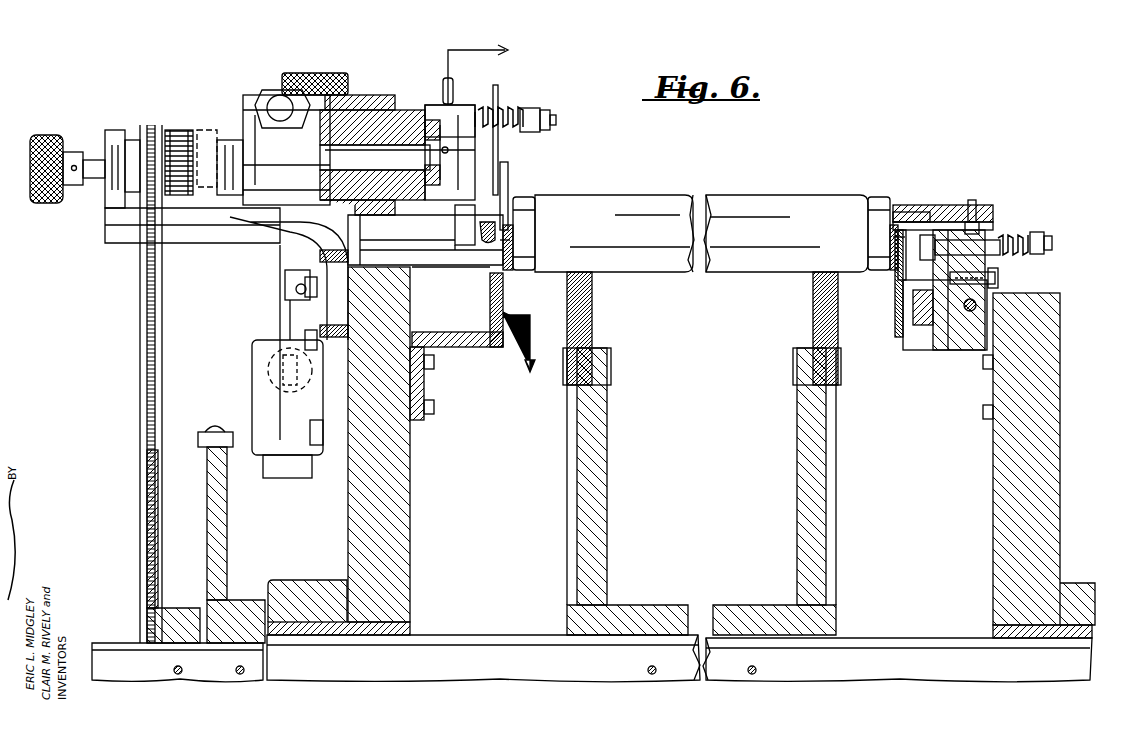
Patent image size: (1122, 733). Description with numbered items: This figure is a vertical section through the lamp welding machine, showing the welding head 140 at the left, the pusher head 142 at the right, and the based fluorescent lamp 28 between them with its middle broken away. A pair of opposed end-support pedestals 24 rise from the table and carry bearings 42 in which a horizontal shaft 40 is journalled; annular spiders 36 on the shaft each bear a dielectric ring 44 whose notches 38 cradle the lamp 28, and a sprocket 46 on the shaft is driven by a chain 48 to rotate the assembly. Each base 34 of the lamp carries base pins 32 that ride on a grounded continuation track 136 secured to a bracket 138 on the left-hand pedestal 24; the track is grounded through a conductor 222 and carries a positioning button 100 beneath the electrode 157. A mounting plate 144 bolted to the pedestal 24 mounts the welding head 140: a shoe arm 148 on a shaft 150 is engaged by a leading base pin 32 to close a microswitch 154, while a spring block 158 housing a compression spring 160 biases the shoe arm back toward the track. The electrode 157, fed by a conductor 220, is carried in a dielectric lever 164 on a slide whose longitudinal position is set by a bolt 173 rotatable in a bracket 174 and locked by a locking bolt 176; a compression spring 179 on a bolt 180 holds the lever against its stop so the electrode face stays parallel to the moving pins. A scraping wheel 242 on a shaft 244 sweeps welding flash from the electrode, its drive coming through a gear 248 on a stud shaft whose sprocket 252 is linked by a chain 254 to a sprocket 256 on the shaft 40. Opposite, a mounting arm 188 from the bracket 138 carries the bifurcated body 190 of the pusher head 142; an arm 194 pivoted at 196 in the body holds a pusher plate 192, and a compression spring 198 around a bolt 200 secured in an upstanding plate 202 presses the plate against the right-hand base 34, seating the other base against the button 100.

The end-support pedestal 24 is at (400, 531).
The based fluorescent lamp 28 is at (713, 203).
The base pin 32 is at (512, 230).
The base 34 is at (525, 198).
The annular spider 36 is at (610, 378).
The serrations or notches 38 is at (592, 276).
The horizontal shaft 40 is at (478, 645).
The bearing 42 is at (312, 590).
The ring 44 is at (592, 322).
The sprocket 46 is at (228, 545).
The chain 48 is at (200, 432).
The positioning button 100 is at (525, 240).
The continuation track 136 is at (505, 303).
The bracket 138 is at (463, 348).
The welding head 140 is at (245, 98).
The pusher head 142 is at (938, 200).
The mounting plate 144 is at (195, 226).
The shoe arm 148 is at (508, 176).
The shaft 150 is at (272, 247).
The microswitch 154 is at (258, 396).
The electrode 157 is at (468, 245).
The spring block 158 is at (290, 296).
The compression spring 160 is at (290, 282).
The lever 164 is at (455, 110).
The bolt 173 is at (72, 158).
The bracket 174 is at (207, 128).
The locking bolt 176 is at (298, 78).
The compression spring 179 is at (503, 110).
The bolt 180 is at (552, 120).
The mounting arm 188 is at (918, 312).
The bifurcated body 190 is at (960, 352).
The pusher plate 192 is at (905, 205).
The arm 194 is at (1000, 268).
The pivot 196 is at (976, 301).
The compression spring 198 is at (1000, 235).
The bolt 200 is at (1046, 234).
The plate 202 is at (900, 266).
The conductor 220 is at (448, 50).
The conductor 222 is at (533, 372).
The scraping wheel 242 is at (497, 88).
The shaft 244 is at (375, 143).
The gear 248 is at (178, 128).
The sprocket 252 is at (130, 125).
The chain 254 is at (140, 366).
The sprocket 256 is at (147, 558).